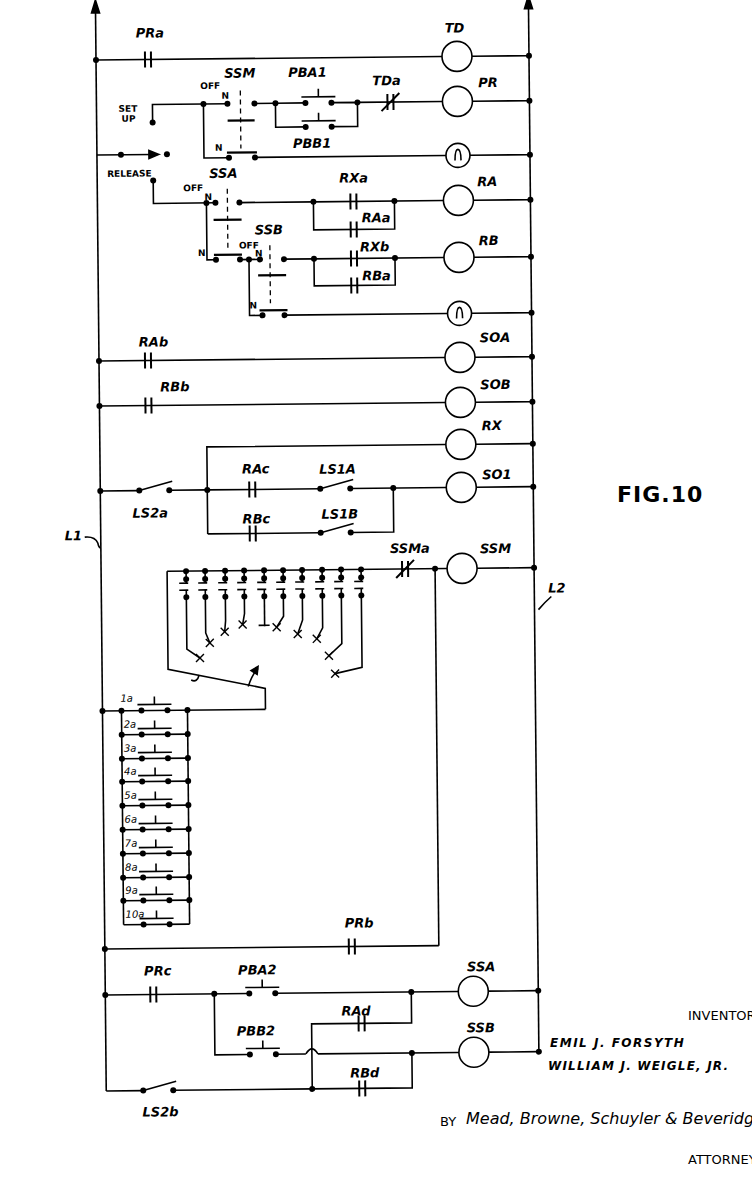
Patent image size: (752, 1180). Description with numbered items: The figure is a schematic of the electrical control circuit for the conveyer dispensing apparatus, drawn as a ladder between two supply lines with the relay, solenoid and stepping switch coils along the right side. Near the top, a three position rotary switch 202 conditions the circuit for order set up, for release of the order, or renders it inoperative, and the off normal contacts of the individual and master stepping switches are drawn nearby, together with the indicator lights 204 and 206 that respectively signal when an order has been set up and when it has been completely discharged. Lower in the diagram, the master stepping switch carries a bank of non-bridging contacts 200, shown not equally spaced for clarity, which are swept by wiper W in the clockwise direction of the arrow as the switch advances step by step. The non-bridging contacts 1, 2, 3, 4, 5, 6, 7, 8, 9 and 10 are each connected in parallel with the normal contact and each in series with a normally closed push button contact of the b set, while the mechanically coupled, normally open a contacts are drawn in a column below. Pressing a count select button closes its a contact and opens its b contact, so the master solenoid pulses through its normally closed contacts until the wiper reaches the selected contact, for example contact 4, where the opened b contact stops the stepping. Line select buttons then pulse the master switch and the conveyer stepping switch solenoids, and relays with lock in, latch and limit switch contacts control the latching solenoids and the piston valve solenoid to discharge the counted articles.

The bank of non-bridging contacts 200 is at (266, 638).
The three position rotary switch 202 is at (124, 156).
The indicator light 204 is at (462, 150).
The indicator light 206 is at (462, 308).
The non-bridging contact 1 is at (191, 617).
The non-bridging contact 2 is at (205, 611).
The non-bridging contact 3 is at (222, 605).
The non-bridging contact 4 is at (241, 601).
The non-bridging contact 5 is at (259, 602).
The non-bridging contact 6 is at (277, 602).
The non-bridging contact 7 is at (296, 606).
The non-bridging contact 8 is at (312, 612).
The non-bridging contact 9 is at (328, 617).
The non-bridging contact 10 is at (340, 628).